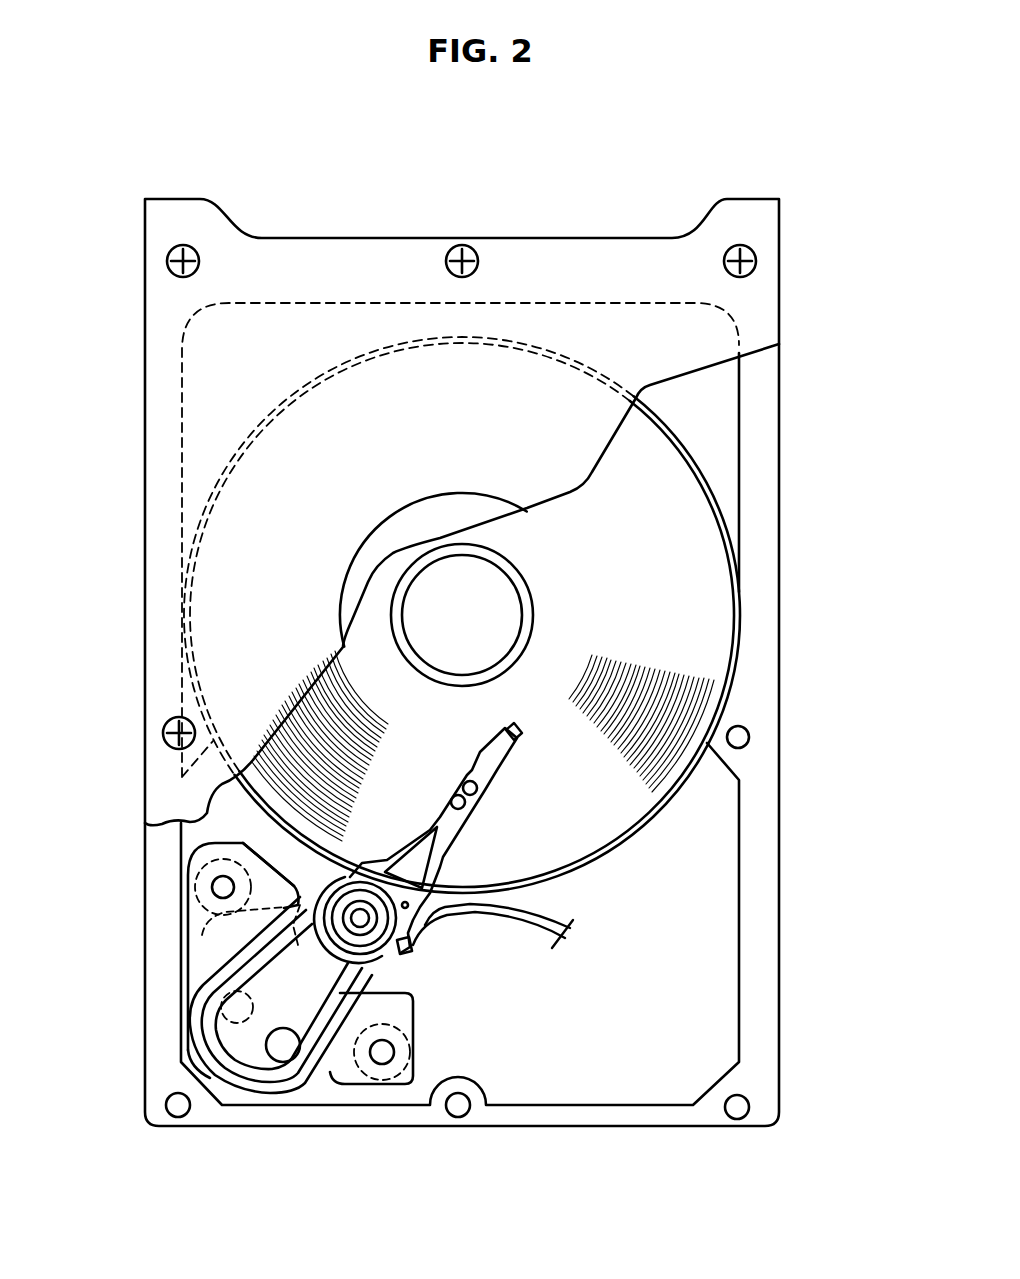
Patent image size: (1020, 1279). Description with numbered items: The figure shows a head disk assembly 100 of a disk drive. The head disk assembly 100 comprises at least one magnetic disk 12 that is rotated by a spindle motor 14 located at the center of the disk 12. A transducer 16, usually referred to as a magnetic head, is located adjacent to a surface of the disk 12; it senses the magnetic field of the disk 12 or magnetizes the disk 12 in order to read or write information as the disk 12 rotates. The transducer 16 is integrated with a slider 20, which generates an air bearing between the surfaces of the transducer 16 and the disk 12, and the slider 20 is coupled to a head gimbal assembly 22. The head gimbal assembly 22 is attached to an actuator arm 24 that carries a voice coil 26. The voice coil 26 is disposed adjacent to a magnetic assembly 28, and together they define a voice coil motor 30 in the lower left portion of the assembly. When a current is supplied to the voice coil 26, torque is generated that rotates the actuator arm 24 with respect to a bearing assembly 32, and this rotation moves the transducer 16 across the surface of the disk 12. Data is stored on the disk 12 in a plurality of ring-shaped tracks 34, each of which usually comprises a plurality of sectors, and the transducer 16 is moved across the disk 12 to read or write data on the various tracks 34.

The head disk assembly 100 is at (676, 161).
The magnetic disk 12 is at (705, 549).
The spindle motor 14 is at (438, 592).
The transducer 16 is at (507, 748).
The slider 20 is at (521, 735).
The head gimbal assembly 22 is at (497, 775).
The actuator arm 24 is at (278, 937).
The voice coil 26 is at (205, 1000).
The magnetic assembly 28 is at (223, 950).
The voice coil motor 30 is at (332, 1062).
The bearing assembly 32 is at (375, 932).
The tracks 34 is at (328, 726).